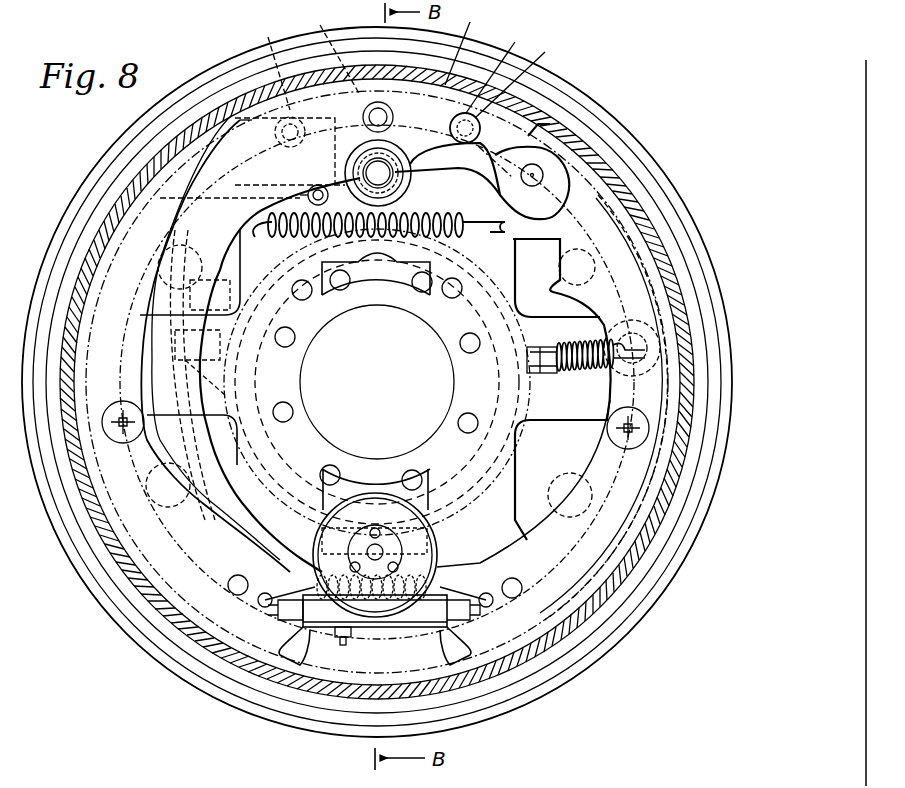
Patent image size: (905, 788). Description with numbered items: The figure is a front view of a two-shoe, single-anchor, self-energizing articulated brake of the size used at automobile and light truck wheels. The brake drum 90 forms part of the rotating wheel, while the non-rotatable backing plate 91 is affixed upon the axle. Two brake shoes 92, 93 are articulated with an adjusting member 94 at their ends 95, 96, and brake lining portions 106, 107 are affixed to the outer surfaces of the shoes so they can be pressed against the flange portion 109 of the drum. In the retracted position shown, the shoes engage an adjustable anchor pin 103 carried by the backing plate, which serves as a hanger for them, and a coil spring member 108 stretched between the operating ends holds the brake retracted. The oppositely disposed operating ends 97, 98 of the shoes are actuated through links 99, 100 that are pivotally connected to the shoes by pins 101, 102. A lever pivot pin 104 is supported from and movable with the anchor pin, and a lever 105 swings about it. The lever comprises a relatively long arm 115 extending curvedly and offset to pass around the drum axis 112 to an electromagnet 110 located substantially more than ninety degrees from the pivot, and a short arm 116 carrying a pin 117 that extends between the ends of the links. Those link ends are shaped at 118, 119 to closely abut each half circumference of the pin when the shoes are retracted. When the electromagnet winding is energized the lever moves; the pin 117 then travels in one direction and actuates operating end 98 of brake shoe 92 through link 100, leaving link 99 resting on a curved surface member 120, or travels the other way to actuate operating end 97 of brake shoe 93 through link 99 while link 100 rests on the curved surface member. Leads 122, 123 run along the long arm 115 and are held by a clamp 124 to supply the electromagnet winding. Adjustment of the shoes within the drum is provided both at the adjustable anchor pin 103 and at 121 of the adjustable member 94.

The brake drum 90 is at (527, 93).
The backing plate 91 is at (712, 257).
The brake shoe 92 is at (570, 228).
The brake shoe 93 is at (180, 262).
The adjusting member 94 is at (413, 620).
The end of brake shoe 95 is at (276, 612).
The end of brake shoe 96 is at (474, 612).
The operating end 97 is at (252, 319).
The operating end 98 is at (484, 153).
The link 99 is at (330, 49).
The link 100 is at (501, 69).
The pin 101 is at (520, 77).
The pin 102 is at (270, 61).
The adjustable anchor pin 103 is at (473, 43).
The lever pivot pin 104 is at (382, 177).
The lever 105 is at (223, 267).
The brake lining portion 106 is at (598, 187).
The brake lining portion 107 is at (183, 147).
The coil spring member 108 is at (460, 248).
The flange portion 109 is at (603, 147).
The electromagnet 110 is at (443, 552).
The drum axis 112 is at (378, 382).
The long arm 115 is at (283, 513).
The short arm 116 is at (425, 177).
The pin 117 is at (375, 105).
The shaped end of link 118 is at (447, 128).
The shaped end of link 119 is at (335, 128).
The curved surface member 120 is at (379, 211).
The adjustment of adjustable member 121 is at (343, 645).
The lead 122 is at (242, 330).
The lead 123 is at (211, 374).
The clamp 124 is at (215, 295).